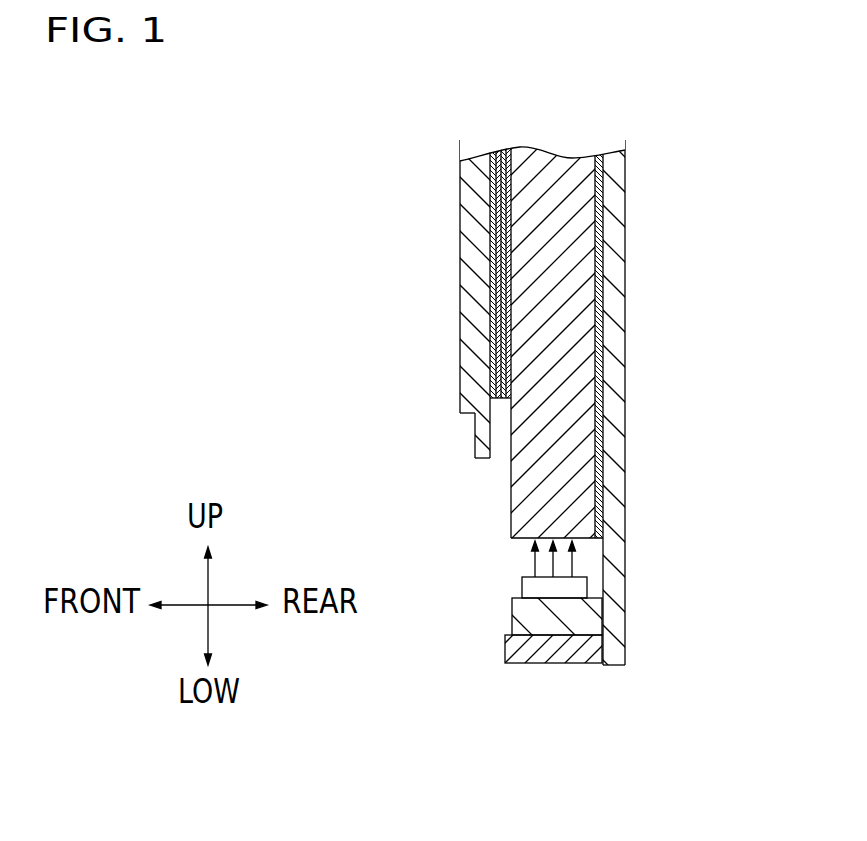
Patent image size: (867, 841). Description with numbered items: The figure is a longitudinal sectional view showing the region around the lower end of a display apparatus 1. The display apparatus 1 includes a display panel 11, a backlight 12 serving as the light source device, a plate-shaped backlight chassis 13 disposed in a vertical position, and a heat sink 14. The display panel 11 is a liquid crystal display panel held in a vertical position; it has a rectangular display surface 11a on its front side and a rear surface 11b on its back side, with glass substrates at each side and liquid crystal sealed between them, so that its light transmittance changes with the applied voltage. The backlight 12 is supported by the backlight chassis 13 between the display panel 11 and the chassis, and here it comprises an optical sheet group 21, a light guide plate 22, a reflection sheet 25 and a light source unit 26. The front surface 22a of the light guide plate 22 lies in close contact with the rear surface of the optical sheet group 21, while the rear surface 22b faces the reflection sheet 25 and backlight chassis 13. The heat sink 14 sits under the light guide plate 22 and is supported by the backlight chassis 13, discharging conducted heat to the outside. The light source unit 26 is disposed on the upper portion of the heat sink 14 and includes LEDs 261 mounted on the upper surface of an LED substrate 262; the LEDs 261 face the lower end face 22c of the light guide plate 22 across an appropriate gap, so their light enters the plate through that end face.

The display apparatus 1 is at (318, 130).
The display panel 11 is at (328, 240).
The display surface 11a is at (461, 272).
The rear surface 11b is at (493, 313).
The backlight 12 is at (506, 570).
The backlight chassis 13 is at (620, 351).
The heat sink 14 is at (537, 663).
The optical sheet group 21 is at (493, 360).
The light guide plate 22 is at (588, 199).
The front surface 22a is at (513, 231).
The rear surface 22b is at (591, 252).
The lower end face 22c is at (512, 537).
The reflection sheet 25 is at (600, 415).
The light source unit 26 is at (715, 555).
The LED 261 is at (577, 587).
The LED substrate 262 is at (582, 623).